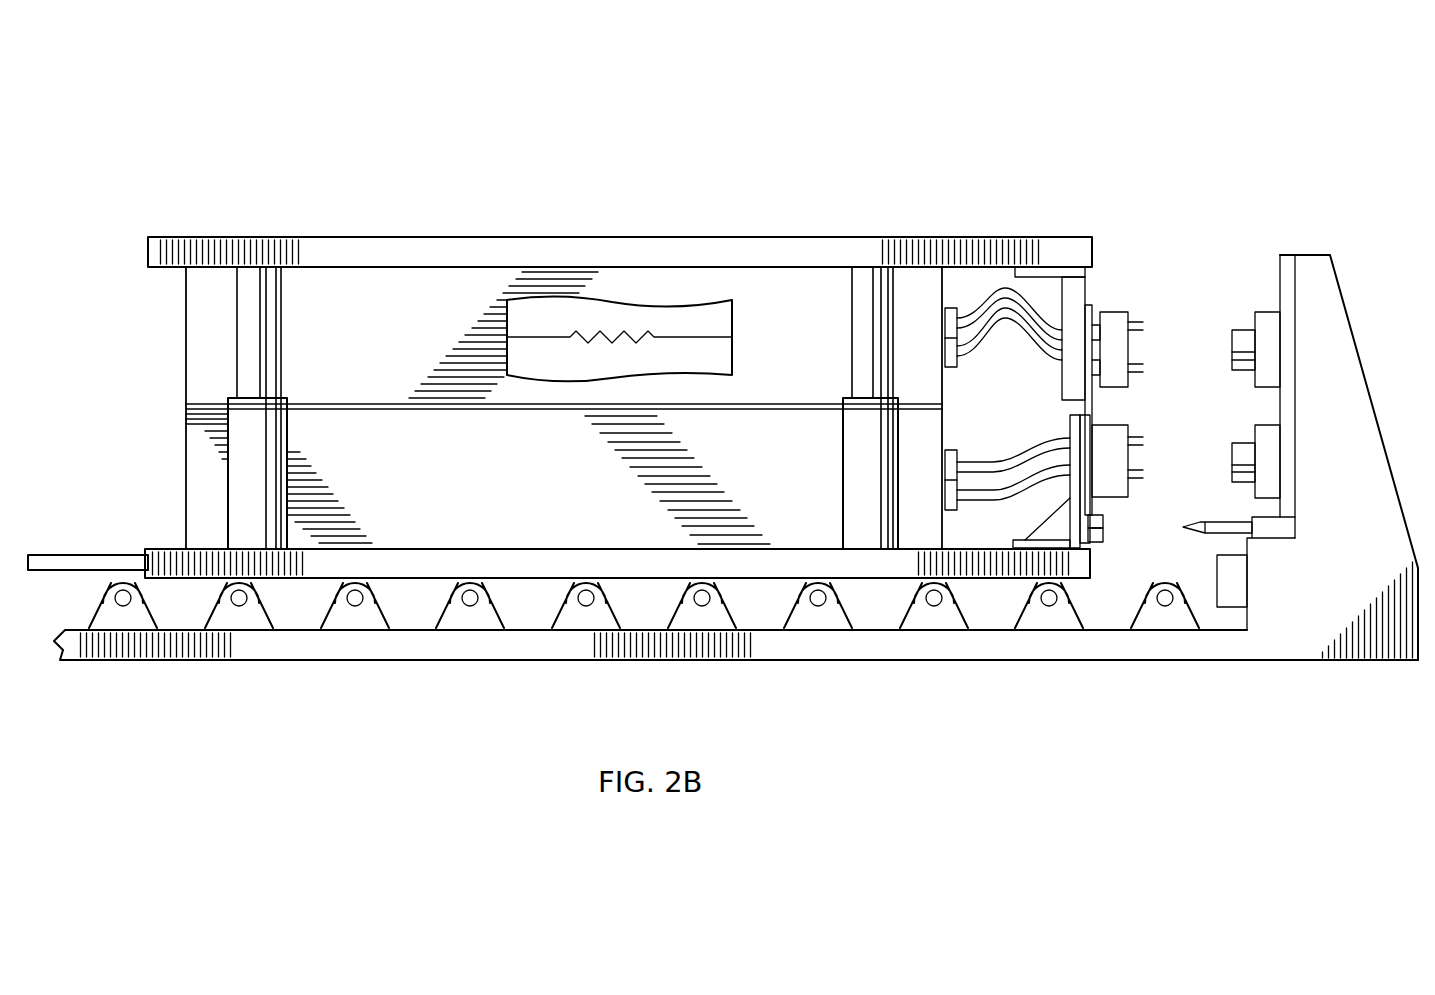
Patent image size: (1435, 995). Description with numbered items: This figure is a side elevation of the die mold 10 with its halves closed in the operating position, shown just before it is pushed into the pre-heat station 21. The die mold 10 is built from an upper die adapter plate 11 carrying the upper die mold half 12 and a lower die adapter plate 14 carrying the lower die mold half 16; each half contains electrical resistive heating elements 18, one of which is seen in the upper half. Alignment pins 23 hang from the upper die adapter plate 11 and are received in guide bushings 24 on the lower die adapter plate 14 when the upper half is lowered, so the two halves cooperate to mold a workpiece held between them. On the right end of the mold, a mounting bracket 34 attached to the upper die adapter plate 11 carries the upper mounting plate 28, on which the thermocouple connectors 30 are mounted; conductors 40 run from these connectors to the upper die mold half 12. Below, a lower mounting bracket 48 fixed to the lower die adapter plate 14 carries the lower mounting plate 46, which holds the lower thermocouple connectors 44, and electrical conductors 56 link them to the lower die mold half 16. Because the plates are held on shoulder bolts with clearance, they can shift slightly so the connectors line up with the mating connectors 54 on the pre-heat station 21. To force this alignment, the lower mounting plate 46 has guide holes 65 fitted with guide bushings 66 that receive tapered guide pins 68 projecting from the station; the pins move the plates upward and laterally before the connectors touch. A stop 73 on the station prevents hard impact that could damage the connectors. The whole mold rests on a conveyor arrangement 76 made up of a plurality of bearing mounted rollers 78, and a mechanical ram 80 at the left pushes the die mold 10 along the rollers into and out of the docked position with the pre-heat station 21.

The die mold 10 is at (597, 180).
The upper die adapter plate 11 is at (545, 245).
The upper die mold half 12 is at (795, 374).
The lower die adapter plate 14 is at (447, 556).
The lower die mold half 16 is at (473, 469).
The electrical resistive heating elements 18 is at (627, 335).
The pre-heat station 21 is at (1345, 301).
The alignment pins 23 is at (283, 307).
The guide bushings 24 is at (287, 432).
The mounting plate 28 is at (1100, 312).
The thermocouple connectors 30 is at (1143, 356).
The mounting bracket 34 is at (1088, 284).
The conductors 40 is at (1045, 360).
The thermocouple connectors 44 is at (1136, 468).
The lower mounting plate 46 is at (1100, 427).
The lower mounting bracket 48 is at (1068, 426).
The mating connectors 54 is at (1268, 312).
The electrical conductors 56 is at (1022, 505).
The guide holes 65 is at (1103, 525).
The guide bushings 66 is at (1100, 543).
The tapered guide pins 68 is at (1210, 537).
The stop 73 is at (1228, 607).
The conveyor arrangement 76 is at (470, 662).
The bearing mounted rollers 78 is at (100, 589).
The mechanical ram 80 is at (68, 555).